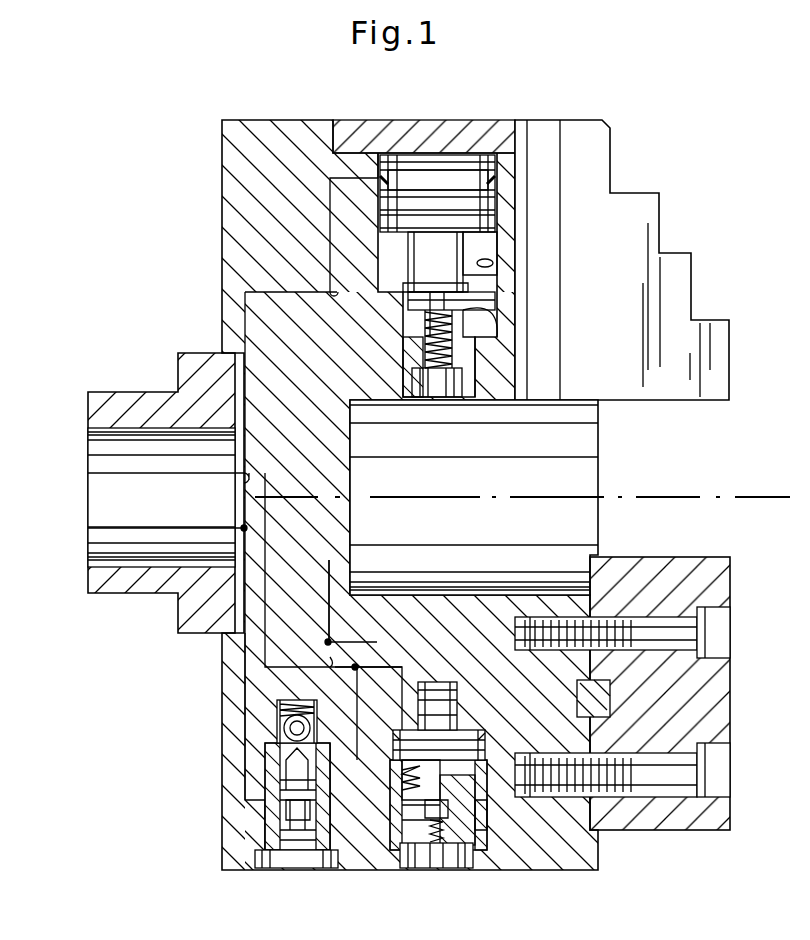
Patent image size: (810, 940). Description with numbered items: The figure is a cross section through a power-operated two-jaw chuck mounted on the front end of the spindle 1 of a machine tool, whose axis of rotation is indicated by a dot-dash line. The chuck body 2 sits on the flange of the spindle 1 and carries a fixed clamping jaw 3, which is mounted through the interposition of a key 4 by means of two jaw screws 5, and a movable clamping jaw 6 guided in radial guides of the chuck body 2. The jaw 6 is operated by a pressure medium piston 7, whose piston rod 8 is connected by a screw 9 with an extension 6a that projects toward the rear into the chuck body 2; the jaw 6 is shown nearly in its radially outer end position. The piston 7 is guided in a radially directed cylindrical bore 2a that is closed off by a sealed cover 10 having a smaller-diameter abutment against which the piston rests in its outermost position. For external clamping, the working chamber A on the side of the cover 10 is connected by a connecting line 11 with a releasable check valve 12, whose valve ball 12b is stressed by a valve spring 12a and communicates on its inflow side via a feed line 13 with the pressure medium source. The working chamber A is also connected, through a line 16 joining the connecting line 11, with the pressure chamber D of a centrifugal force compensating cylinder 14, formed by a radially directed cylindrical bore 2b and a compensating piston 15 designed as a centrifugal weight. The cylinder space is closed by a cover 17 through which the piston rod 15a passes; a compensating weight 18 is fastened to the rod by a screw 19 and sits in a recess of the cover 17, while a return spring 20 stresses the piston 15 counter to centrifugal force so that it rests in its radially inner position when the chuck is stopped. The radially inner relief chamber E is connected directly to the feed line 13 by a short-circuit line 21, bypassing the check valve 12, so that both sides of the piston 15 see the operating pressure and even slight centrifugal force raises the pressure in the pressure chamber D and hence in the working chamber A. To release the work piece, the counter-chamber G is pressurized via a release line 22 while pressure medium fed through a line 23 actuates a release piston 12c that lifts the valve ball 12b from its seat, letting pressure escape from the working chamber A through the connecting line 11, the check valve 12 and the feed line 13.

The spindle 1 is at (157, 398).
The chuck body 2 is at (238, 146).
The cylindrical bore 2a is at (488, 265).
The cylindrical bore 2b is at (393, 734).
The fixed clamping jaw 3 is at (687, 807).
The key 4 is at (597, 710).
The jaw screws 5 is at (657, 620).
The movable clamping jaw 6 is at (595, 180).
The extension 6a is at (471, 365).
The pressure medium piston 7 is at (414, 228).
The piston rod 8 is at (452, 264).
The screw 9 is at (432, 365).
The cover 10 is at (357, 118).
The connecting line 11 is at (327, 597).
The check valve 12 is at (307, 823).
The valve spring 12a is at (280, 705).
The valve ball 12b is at (300, 730).
The release piston 12c is at (290, 807).
The feed line 13 is at (105, 473).
The centrifugal force compensating cylinder 14 is at (425, 785).
The compensating piston 15 is at (462, 790).
The piston rod 15a is at (410, 848).
The line 16 is at (415, 643).
The cover 17 is at (388, 850).
The compensating weight 18 is at (423, 850).
The screw 19 is at (443, 817).
The return spring 20 is at (395, 790).
The short-circuit line 21 is at (378, 665).
The release line 22 is at (100, 528).
The line 23 is at (247, 768).
The working chamber A is at (490, 190).
The pressure chamber D is at (480, 813).
The relief chamber E is at (470, 667).
The counter-chamber G is at (488, 245).